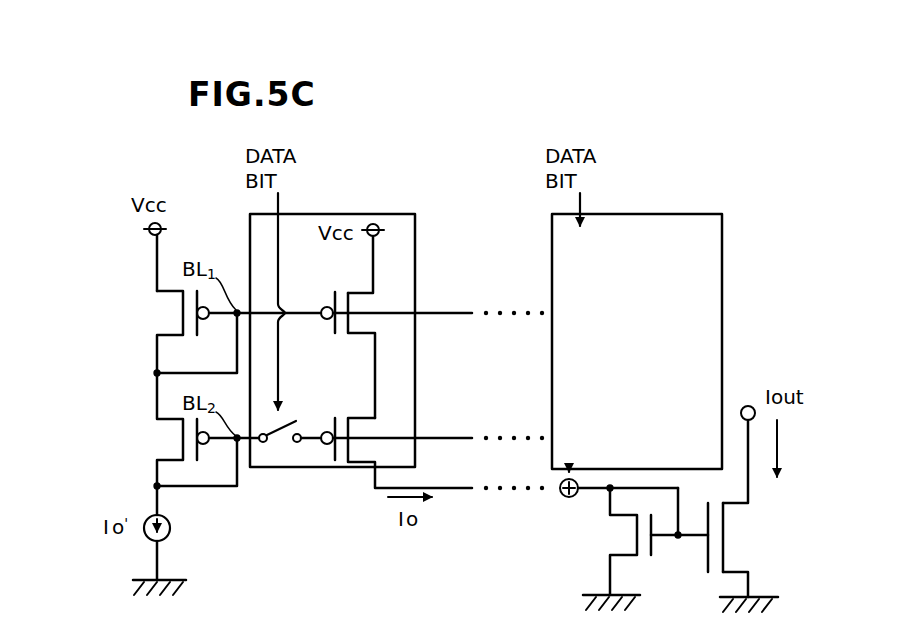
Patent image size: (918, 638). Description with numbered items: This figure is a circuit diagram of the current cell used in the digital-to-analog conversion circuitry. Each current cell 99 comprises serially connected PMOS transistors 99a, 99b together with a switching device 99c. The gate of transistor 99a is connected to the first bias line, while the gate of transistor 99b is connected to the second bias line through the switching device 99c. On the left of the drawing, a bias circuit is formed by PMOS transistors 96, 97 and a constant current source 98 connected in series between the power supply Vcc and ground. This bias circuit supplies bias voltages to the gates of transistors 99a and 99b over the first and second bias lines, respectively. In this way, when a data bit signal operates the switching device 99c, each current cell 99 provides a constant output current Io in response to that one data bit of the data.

The PMOS transistor 96 is at (156, 313).
The PMOS transistor 97 is at (156, 438).
The constant current source 98 is at (147, 540).
The current cell circuit 99 is at (368, 214).
The PMOS transistor 99a is at (340, 300).
The PMOS transistor 99b is at (341, 422).
The switching device 99c is at (283, 443).